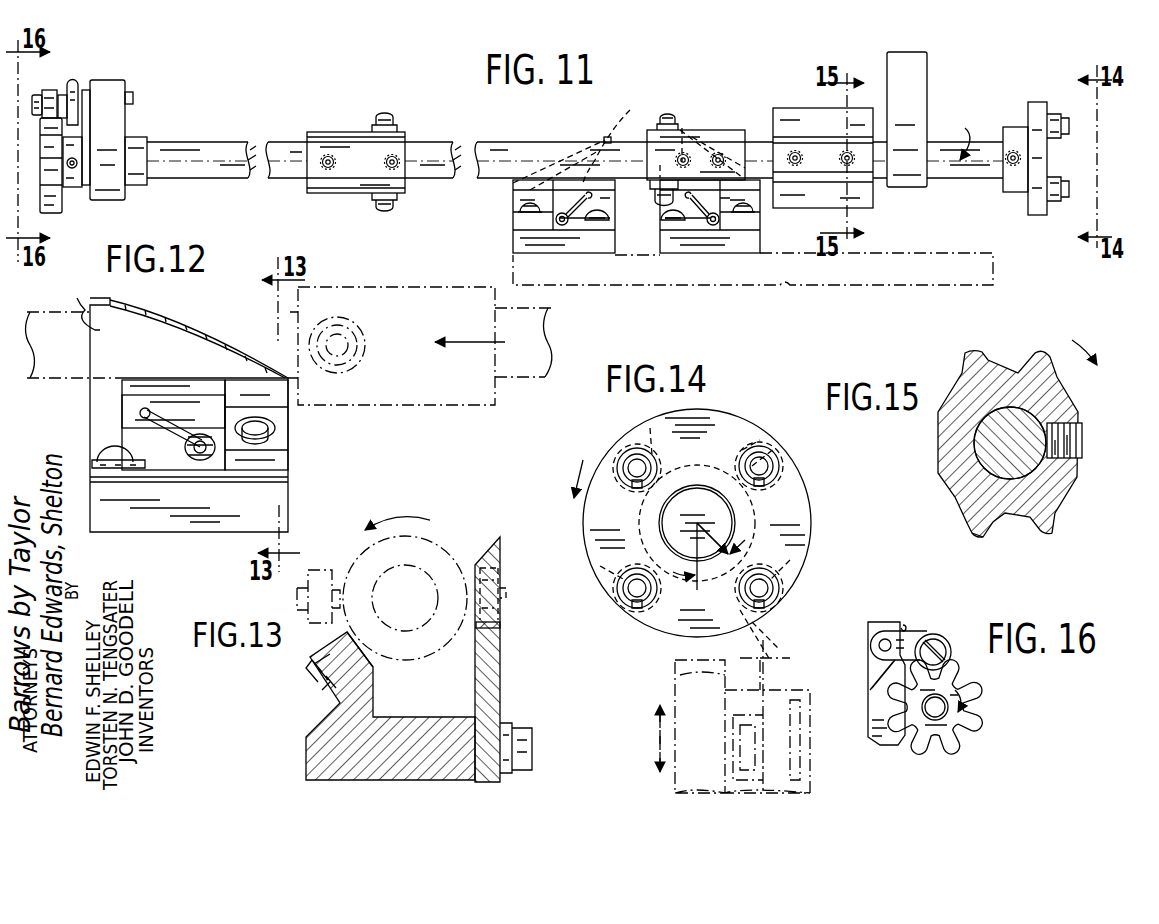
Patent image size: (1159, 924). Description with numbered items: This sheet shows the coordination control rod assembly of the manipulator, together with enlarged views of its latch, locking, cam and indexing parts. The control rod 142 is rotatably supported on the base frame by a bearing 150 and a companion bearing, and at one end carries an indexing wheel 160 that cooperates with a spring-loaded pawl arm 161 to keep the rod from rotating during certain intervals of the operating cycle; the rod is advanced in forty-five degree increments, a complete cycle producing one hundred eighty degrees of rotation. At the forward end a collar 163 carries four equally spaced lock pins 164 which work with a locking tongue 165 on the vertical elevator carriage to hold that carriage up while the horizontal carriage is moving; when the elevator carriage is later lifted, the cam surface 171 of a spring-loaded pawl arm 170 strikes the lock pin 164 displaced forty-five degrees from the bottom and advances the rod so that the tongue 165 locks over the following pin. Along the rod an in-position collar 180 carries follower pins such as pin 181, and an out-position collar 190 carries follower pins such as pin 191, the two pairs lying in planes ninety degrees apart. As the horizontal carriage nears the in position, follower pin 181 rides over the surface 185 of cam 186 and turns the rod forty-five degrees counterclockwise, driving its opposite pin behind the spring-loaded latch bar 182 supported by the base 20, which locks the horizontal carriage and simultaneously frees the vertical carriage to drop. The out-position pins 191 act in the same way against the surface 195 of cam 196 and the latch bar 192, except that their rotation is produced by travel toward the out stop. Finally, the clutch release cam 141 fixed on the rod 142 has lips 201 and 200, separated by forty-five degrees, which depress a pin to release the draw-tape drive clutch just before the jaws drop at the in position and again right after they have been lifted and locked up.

In FIG. 11, the base 20 is at (781, 284).
In FIG. 11, the clutch release cam 141 is at (782, 108).
In FIG. 15, the clutch release cam 141 is at (1072, 395).
In FIG. 11, the control rod 142 is at (202, 150).
In FIG. 12, the control rod 142 is at (74, 378).
In FIG. 13, the control rod 142 is at (422, 624).
In FIG. 14, the control rod 142 is at (661, 522).
In FIG. 15, the control rod 142 is at (983, 440).
In FIG. 11, the bearing 150 is at (111, 108).
In FIG. 11, the indexing wheel 160 is at (54, 194).
In FIG. 16, the indexing wheel 160 is at (987, 698).
In FIG. 11, the spring-loaded pawl arm 161 is at (50, 90).
In FIG. 16, the spring-loaded pawl arm 161 is at (924, 634).
In FIG. 11, the collar 163 is at (1038, 102).
In FIG. 14, the collar 163 is at (725, 418).
In FIG. 11, the lock pins 164 is at (1062, 138).
In FIG. 14, the lock pins 164 is at (623, 450).
In FIG. 14, the locking tongue 165 is at (680, 694).
In FIG. 14, the spring-loaded pawl arm 170 is at (782, 662).
In FIG. 14, the cam surface 171 is at (778, 640).
In FIG. 11, the in position collar 180 is at (731, 134).
In FIG. 12, the in position collar 180 is at (420, 405).
In FIG. 13, the in position collar 180 is at (428, 540).
In FIG. 14, the in position collar 180 is at (785, 503).
In FIG. 11, the follower pin 181 is at (658, 123).
In FIG. 12, the follower pin 181 is at (345, 367).
In FIG. 13, the follower pin 181 is at (490, 567).
In FIG. 14, the follower pin 181 is at (742, 450).
In FIG. 11, the spring-loaded latch bar 182 is at (700, 212).
In FIG. 12, the spring-loaded latch bar 182 is at (172, 404).
In FIG. 13, the spring-loaded latch bar 182 is at (358, 653).
In FIG. 11, the cam surface 185 is at (690, 150).
In FIG. 12, the cam surface 185 is at (175, 342).
In FIG. 13, the cam surface 185 is at (496, 627).
In FIG. 11, the cam 186 is at (681, 128).
In FIG. 12, the cam 186 is at (82, 333).
In FIG. 13, the cam 186 is at (480, 635).
In FIG. 11, the out position collar 190 is at (338, 134).
In FIG. 11, the follower pin 191 is at (392, 128).
In FIG. 14, the follower pin 191 is at (650, 428).
In FIG. 11, the latch bar 192 is at (565, 185).
In FIG. 11, the cam surface 195 is at (588, 174).
In FIG. 11, the cam 196 is at (630, 110).
In FIG. 11, the cam lip 200 is at (812, 202).
In FIG. 15, the cam lip 200 is at (1050, 531).
In FIG. 15, the cam lip 201 is at (978, 531).